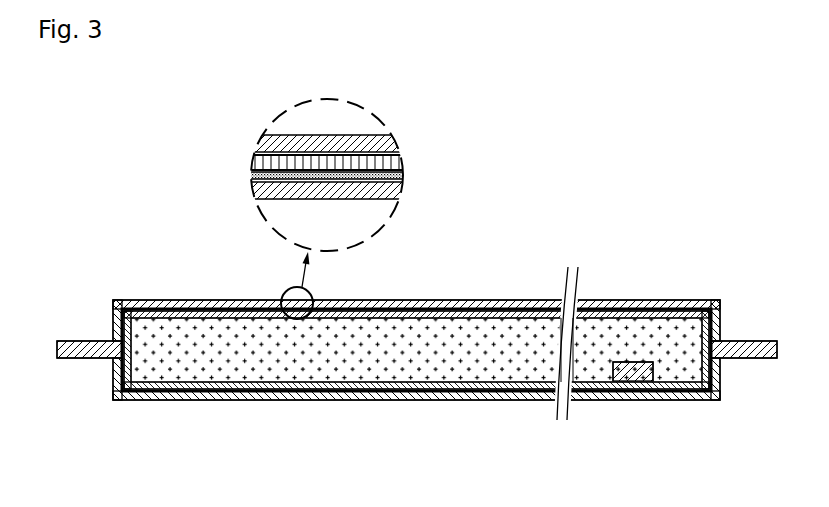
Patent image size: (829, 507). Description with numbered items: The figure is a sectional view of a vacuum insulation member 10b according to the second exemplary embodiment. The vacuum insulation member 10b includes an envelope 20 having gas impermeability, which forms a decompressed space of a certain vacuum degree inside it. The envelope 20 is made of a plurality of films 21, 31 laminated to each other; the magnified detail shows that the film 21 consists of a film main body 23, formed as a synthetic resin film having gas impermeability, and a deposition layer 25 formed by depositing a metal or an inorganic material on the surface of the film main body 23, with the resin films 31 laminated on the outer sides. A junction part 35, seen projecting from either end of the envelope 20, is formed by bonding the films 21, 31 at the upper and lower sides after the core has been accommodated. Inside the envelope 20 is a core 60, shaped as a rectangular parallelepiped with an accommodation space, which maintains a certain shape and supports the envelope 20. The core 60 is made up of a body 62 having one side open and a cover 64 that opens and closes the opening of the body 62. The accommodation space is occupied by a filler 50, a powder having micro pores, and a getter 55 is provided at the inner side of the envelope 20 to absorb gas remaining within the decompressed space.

The vacuum insulation member 10b is at (137, 211).
The envelope 20 is at (202, 289).
The film 21 is at (481, 124).
The film main body 23 is at (383, 162).
The deposition layer 25 is at (398, 175).
The resin film 31 is at (340, 143).
The junction part 35 is at (82, 341).
The filler 50 is at (368, 354).
The getter 55 is at (625, 380).
The core 60 is at (637, 197).
The body 62 is at (693, 321).
The cover 64 is at (661, 313).